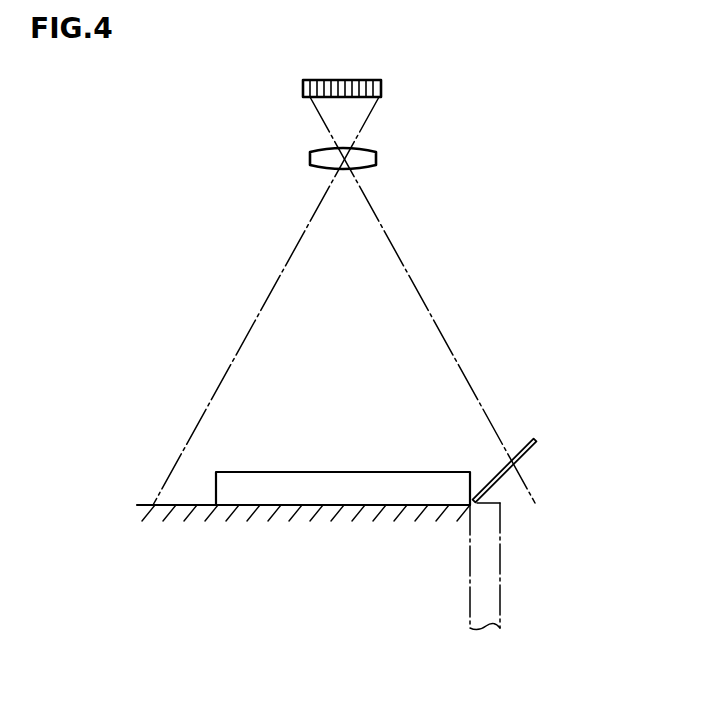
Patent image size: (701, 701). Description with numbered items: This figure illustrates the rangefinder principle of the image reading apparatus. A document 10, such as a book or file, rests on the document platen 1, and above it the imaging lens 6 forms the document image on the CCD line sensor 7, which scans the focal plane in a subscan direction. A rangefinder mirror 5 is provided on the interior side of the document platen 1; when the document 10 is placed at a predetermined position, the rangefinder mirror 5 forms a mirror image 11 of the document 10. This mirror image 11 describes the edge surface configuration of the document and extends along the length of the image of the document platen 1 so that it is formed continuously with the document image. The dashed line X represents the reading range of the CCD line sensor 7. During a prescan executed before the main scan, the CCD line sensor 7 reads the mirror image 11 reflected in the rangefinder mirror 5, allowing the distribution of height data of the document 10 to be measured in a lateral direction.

The CCD line sensor 7 is at (340, 79).
The imaging lens 6 is at (368, 156).
The dashed line X is at (373, 210).
The document platen 1 is at (264, 511).
The document 10 is at (372, 470).
The rangefinder mirror 5 is at (535, 438).
The mirror image 11 is at (503, 576).